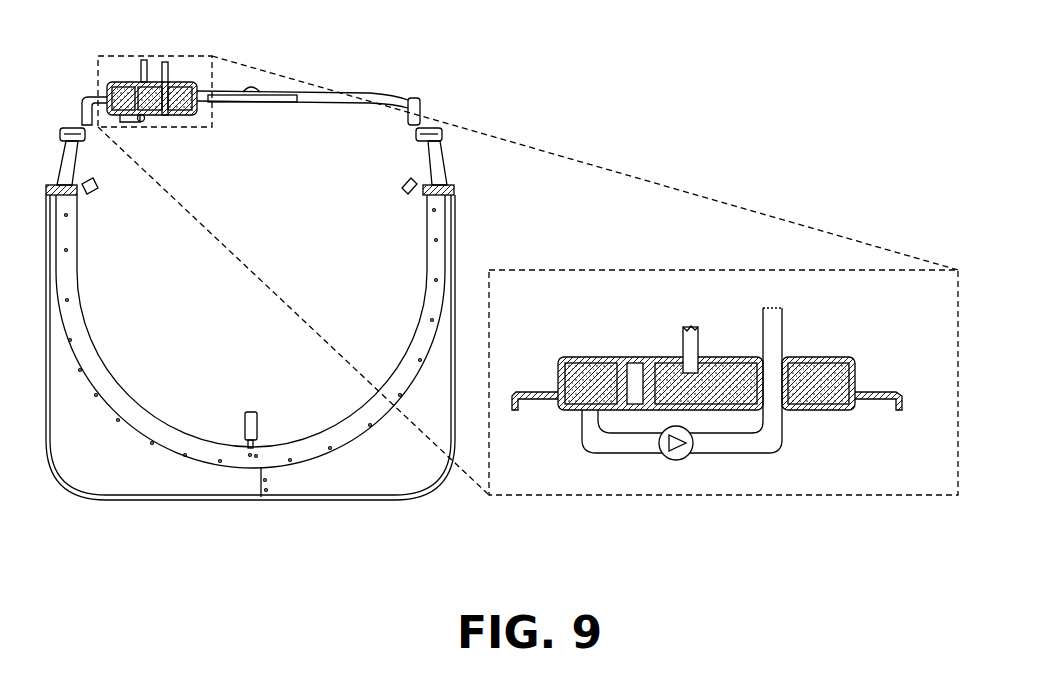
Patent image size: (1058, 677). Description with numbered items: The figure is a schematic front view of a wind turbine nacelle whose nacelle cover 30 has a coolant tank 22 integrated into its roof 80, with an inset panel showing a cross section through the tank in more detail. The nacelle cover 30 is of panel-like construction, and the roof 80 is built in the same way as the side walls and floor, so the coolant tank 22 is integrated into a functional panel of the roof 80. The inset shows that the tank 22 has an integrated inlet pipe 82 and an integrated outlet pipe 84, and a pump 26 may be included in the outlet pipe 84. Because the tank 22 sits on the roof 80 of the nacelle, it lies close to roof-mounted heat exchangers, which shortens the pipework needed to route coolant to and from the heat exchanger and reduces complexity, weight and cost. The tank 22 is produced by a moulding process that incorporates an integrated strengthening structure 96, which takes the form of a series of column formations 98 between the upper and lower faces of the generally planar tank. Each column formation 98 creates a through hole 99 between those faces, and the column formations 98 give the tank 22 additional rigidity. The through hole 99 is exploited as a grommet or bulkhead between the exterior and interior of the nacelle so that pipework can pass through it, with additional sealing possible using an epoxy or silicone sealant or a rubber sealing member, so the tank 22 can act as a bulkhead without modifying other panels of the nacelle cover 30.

The coolant tank 22 is at (122, 72).
The pump 26 is at (685, 457).
The nacelle cover 30 is at (462, 210).
The roof 80 is at (378, 90).
The inlet pipe 82 is at (693, 343).
The outlet pipe 84 is at (770, 443).
The strengthening structure 96 is at (577, 357).
The column formations 98 is at (665, 367).
The through hole 99 is at (635, 372).